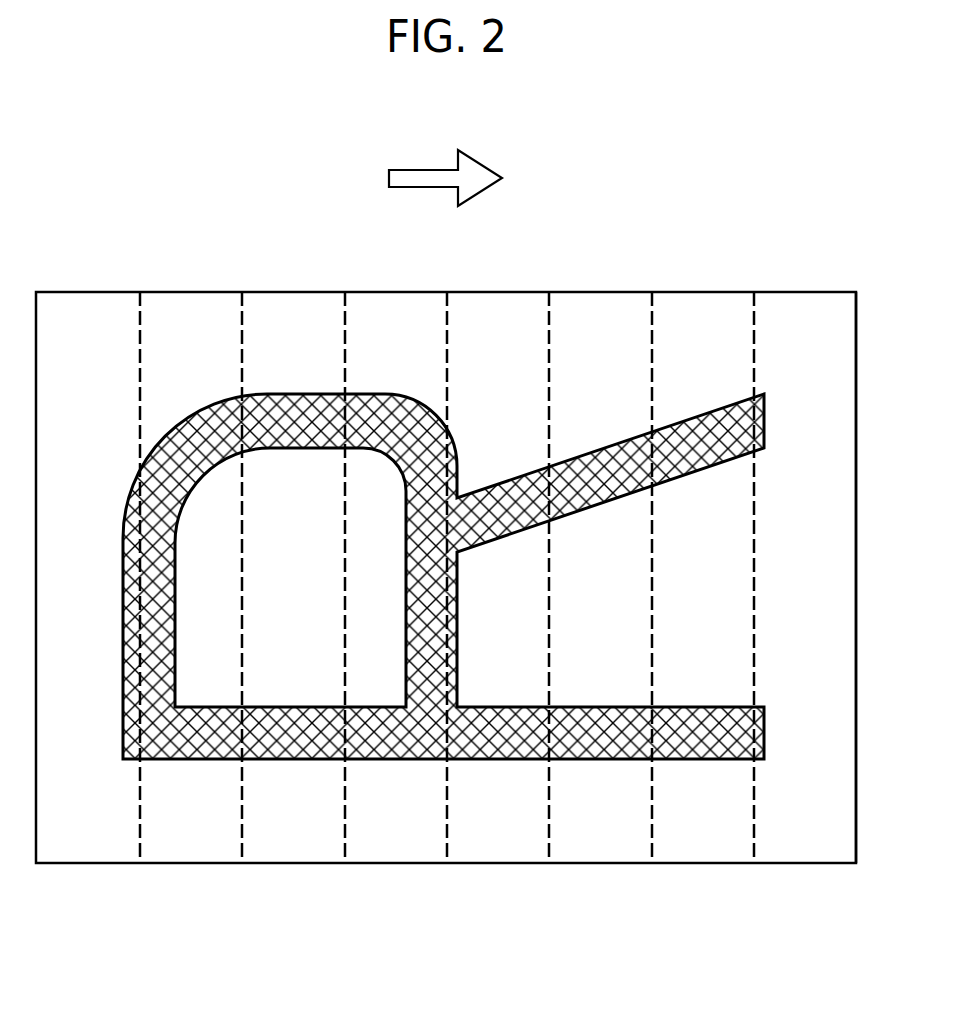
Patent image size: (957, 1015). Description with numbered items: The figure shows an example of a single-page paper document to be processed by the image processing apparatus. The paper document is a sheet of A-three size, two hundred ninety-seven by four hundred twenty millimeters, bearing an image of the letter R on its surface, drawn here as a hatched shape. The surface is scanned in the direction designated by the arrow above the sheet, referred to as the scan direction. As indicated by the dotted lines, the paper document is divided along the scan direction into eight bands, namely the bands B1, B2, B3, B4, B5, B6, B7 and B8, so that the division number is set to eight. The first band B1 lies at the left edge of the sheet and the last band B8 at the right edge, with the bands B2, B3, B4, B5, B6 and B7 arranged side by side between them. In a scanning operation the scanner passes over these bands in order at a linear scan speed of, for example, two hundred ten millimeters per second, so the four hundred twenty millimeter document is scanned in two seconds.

The band B1 is at (86, 291).
The band B2 is at (188, 291).
The band B3 is at (290, 291).
The band B4 is at (392, 291).
The band B5 is at (494, 291).
The band B6 is at (596, 291).
The band B7 is at (699, 291).
The band B8 is at (800, 291).